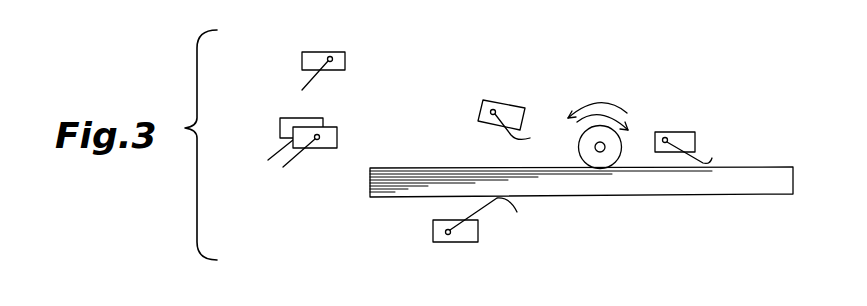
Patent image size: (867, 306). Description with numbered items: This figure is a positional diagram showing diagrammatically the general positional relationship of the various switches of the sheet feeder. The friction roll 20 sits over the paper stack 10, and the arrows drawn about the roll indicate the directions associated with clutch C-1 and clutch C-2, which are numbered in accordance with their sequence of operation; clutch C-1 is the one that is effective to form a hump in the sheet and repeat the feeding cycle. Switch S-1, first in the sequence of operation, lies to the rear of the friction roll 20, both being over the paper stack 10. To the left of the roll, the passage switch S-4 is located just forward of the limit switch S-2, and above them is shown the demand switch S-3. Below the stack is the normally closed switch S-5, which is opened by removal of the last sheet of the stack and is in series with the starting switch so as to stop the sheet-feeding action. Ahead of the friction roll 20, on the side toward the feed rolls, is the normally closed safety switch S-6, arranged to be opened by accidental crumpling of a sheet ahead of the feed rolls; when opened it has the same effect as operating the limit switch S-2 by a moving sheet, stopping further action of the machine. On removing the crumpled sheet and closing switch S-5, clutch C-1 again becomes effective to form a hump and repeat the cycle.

The demand switch S-3 is at (323, 47).
The passage switch S-4 is at (292, 119).
The limit switch S-2 is at (323, 148).
The safety switch S-6 is at (502, 100).
The safety switch S-5 is at (433, 231).
The switch S-1 is at (675, 132).
The friction roll 20 is at (615, 147).
The clutch C-1 is at (612, 104).
The clutch C-2 is at (584, 133).
The paper stack 10 is at (633, 183).